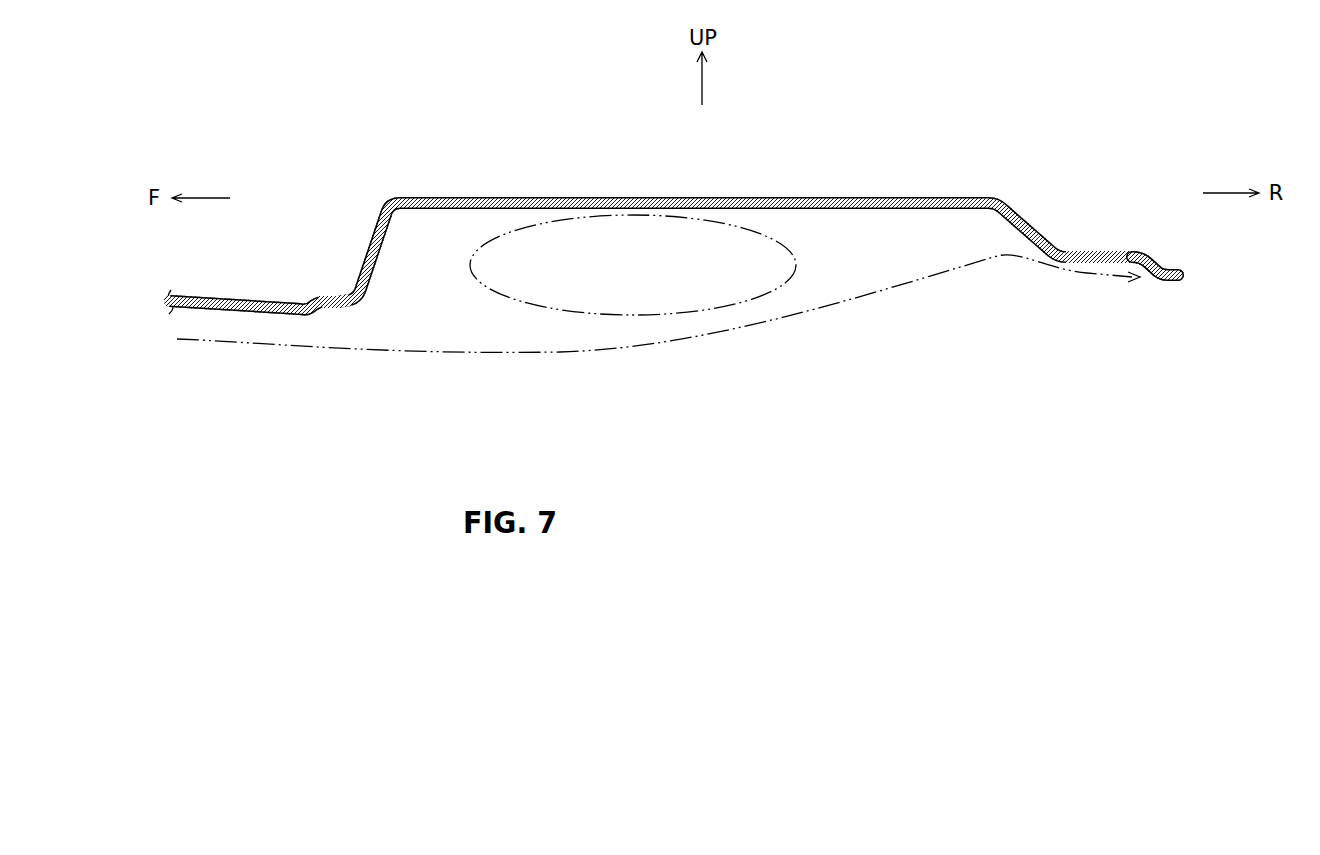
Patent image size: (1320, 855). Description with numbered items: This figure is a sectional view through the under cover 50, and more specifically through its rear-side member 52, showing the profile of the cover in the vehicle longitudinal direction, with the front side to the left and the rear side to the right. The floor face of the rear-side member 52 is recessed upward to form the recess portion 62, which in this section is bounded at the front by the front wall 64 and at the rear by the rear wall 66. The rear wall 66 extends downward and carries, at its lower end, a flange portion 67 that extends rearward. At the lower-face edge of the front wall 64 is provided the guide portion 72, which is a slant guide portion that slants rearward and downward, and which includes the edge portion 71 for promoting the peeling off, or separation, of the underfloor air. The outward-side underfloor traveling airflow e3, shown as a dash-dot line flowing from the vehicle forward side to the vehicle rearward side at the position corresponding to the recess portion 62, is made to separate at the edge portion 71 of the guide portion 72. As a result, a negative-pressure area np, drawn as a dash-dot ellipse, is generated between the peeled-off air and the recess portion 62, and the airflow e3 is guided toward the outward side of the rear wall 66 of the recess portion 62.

The under cover 50 is at (588, 190).
The rear-side member 52 is at (470, 196).
The recess portion 62 is at (845, 207).
The front wall 64 is at (377, 258).
The rear wall 66 is at (1020, 228).
The flange portion 67 is at (1175, 268).
The edge portion 71 is at (309, 314).
The guide portion 72 is at (284, 309).
The negative-pressure area np is at (797, 262).
The outward-side underfloor traveling airflow e3 is at (572, 353).